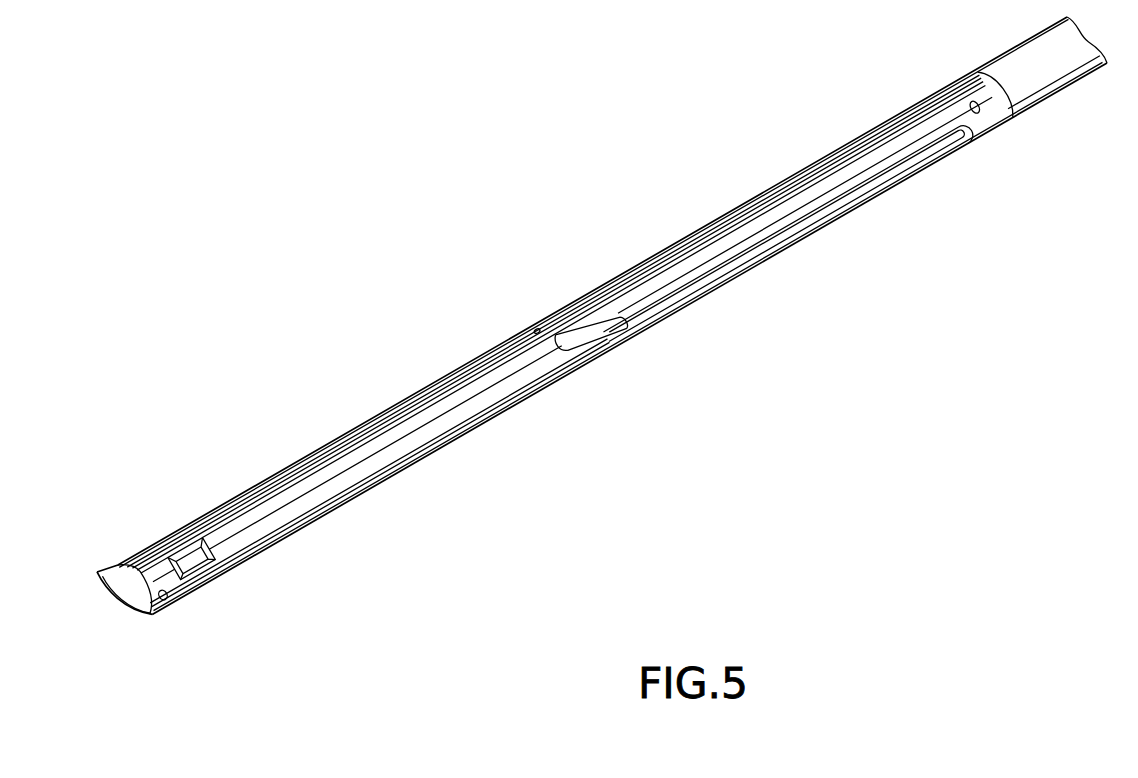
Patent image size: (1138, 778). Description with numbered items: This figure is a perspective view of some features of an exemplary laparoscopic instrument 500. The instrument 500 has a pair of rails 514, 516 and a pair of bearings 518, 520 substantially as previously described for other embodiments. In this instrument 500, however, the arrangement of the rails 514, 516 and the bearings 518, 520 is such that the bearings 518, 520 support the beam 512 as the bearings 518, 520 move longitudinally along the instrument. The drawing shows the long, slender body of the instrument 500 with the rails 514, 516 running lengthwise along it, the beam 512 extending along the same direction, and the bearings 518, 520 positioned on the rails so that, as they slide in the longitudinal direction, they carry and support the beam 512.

The instrument 500 is at (522, 209).
The beam 512 is at (318, 472).
The rail 514 is at (510, 400).
The rail 516 is at (412, 398).
The bearing 518 is at (737, 238).
The bearing 520 is at (670, 250).